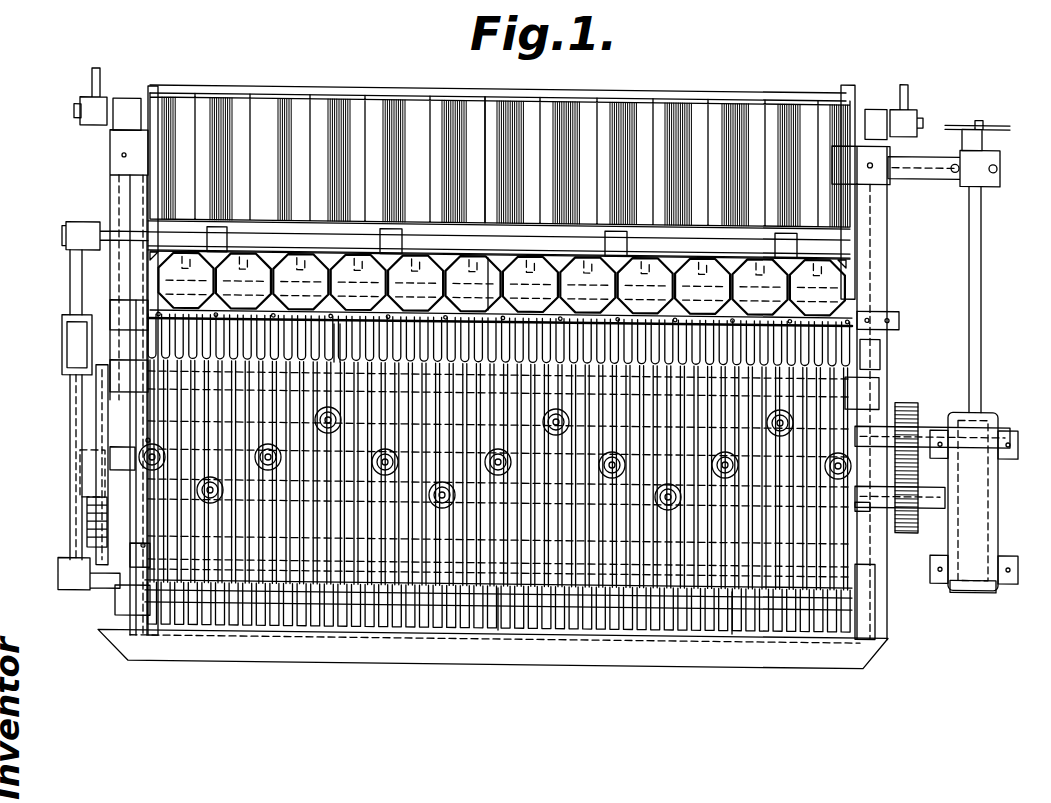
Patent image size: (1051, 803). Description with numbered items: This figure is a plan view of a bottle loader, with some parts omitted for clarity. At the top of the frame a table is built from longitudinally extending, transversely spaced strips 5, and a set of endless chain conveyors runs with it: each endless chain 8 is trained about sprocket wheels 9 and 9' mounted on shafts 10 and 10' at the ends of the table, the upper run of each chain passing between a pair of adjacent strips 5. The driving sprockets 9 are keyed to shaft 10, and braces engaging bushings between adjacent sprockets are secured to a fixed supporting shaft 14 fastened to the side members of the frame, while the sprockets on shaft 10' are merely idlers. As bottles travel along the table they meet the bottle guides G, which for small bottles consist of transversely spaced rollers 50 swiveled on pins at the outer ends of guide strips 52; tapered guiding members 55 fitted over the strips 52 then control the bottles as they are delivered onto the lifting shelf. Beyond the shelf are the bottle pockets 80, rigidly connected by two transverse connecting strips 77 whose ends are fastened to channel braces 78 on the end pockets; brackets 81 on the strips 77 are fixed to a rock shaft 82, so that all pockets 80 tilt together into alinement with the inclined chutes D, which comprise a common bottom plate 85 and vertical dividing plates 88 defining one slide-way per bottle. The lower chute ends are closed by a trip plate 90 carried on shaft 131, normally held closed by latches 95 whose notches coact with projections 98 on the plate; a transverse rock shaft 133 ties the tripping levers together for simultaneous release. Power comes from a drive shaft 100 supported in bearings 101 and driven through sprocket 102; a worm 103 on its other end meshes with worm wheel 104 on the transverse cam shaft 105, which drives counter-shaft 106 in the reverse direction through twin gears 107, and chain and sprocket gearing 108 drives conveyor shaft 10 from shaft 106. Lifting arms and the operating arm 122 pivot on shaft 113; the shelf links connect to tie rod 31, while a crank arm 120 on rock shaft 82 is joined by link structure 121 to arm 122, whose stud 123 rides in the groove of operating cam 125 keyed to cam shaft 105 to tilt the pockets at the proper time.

The strips 5 is at (176, 630).
The endless chain 8 is at (245, 632).
The sprocket wheels 9 is at (877, 393).
The sprocket wheels 9' is at (493, 650).
The shaft 10 is at (77, 383).
The shaft 10' is at (757, 646).
The fixed supporting shaft 14 is at (898, 354).
The tie rod 31 is at (490, 275).
The rollers 50 is at (139, 456).
The guide strip 52 is at (386, 403).
The tapered guiding member 55 is at (340, 328).
The connecting strips 77 is at (270, 250).
The channel braces 78 is at (156, 258).
The bottle pockets 80 is at (740, 275).
The brackets 81 is at (222, 228).
The rock shaft 82 is at (100, 233).
The bottom plate 85 is at (478, 118).
The dividing plates 88 is at (437, 138).
The trip plate 90 is at (776, 93).
The latches 95 is at (159, 86).
The projections 98 is at (152, 96).
The drive shaft 100 is at (985, 286).
The bearings 101 is at (1000, 170).
The sprocket 102 is at (956, 125).
The worm 103 is at (998, 480).
The worm wheel 104 is at (978, 592).
The cam shaft 105 is at (867, 510).
The counter-shaft 106 is at (925, 422).
The twin gears 107 is at (906, 404).
The chain and sprocket gearing 108 is at (874, 384).
The shaft 113 is at (100, 594).
The crank arm 120 is at (70, 281).
The link structure 121 is at (62, 346).
The operating arm 122 is at (76, 406).
The stud 123 is at (80, 478).
The operating cam 125 is at (87, 531).
The shaft 131 is at (76, 113).
The transverse rock shaft 133 is at (92, 87).
The inclined chutes D is at (651, 121).
The bottle guides G is at (500, 632).